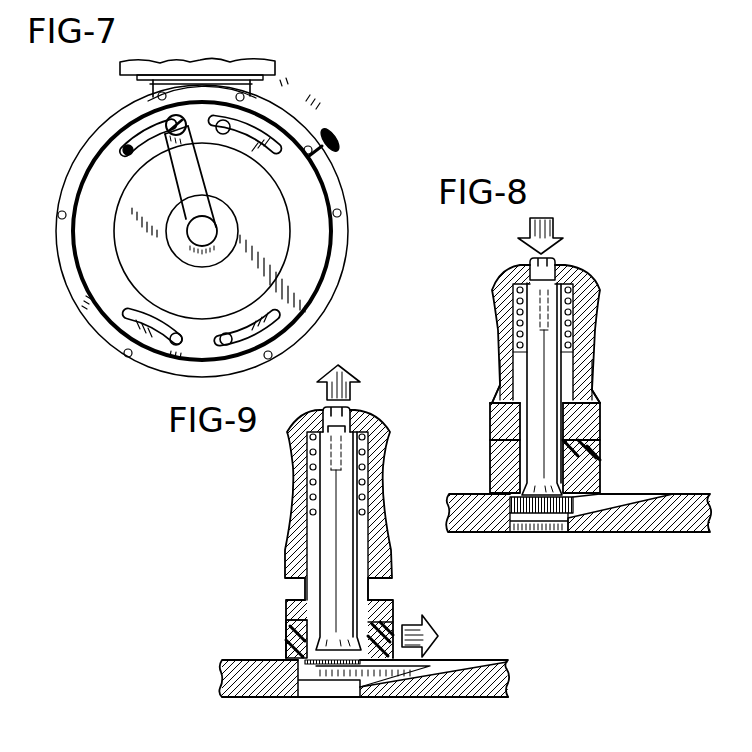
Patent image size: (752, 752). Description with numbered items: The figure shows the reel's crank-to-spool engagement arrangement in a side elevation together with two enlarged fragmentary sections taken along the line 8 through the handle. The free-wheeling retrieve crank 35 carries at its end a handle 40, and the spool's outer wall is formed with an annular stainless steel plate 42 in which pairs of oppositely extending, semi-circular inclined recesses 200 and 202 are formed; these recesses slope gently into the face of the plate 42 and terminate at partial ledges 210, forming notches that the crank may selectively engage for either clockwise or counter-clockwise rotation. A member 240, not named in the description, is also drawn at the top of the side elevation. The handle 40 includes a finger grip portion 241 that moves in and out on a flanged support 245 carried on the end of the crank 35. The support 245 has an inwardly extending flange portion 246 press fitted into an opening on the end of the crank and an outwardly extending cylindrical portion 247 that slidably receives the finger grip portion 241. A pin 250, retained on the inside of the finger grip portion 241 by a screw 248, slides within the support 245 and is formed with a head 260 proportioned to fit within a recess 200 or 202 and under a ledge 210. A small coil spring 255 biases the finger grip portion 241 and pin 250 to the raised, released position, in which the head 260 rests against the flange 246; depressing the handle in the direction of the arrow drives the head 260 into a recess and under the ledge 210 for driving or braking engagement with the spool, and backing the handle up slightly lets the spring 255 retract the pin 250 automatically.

In FIG. 7, the inclined recess 200 is at (136, 136).
In FIG. 9, the inclined recess 200 is at (418, 668).
In FIG. 7, the inclined recess 202 is at (266, 133).
In FIG. 7, the mounting plate 240 is at (150, 100).
In FIG. 7, the retrieve crank 35 is at (194, 193).
In FIG. 8, the retrieve crank 35 is at (587, 460).
In FIG. 7, the section line 8— 8 is at (113, 165).
In FIG. 8, the handle 40 is at (604, 330).
In FIG. 8, the finger grip portion 241 is at (587, 298).
In FIG. 9, the finger grip portion 241 is at (297, 542).
In FIG. 8, the coil spring 255 is at (500, 327).
In FIG. 8, the pin 250 is at (549, 370).
In FIG. 9, the pin 250 is at (325, 487).
In FIG. 8, the cylindrical portion 247 is at (567, 392).
In FIG. 9, the cylindrical portion 247 is at (303, 590).
In FIG. 8, the flanged support 245 is at (500, 442).
In FIG. 9, the flanged support 245 is at (298, 607).
In FIG. 9, the flange portion 246 is at (290, 640).
In FIG. 8, the head 260 is at (606, 492).
In FIG. 8, the partial ledge 210 is at (490, 492).
In FIG. 9, the partial ledge 210 is at (293, 668).
In FIG. 9, the screw 248 is at (346, 410).
In FIG. 9, the annular stainless steel plate 42 is at (448, 690).